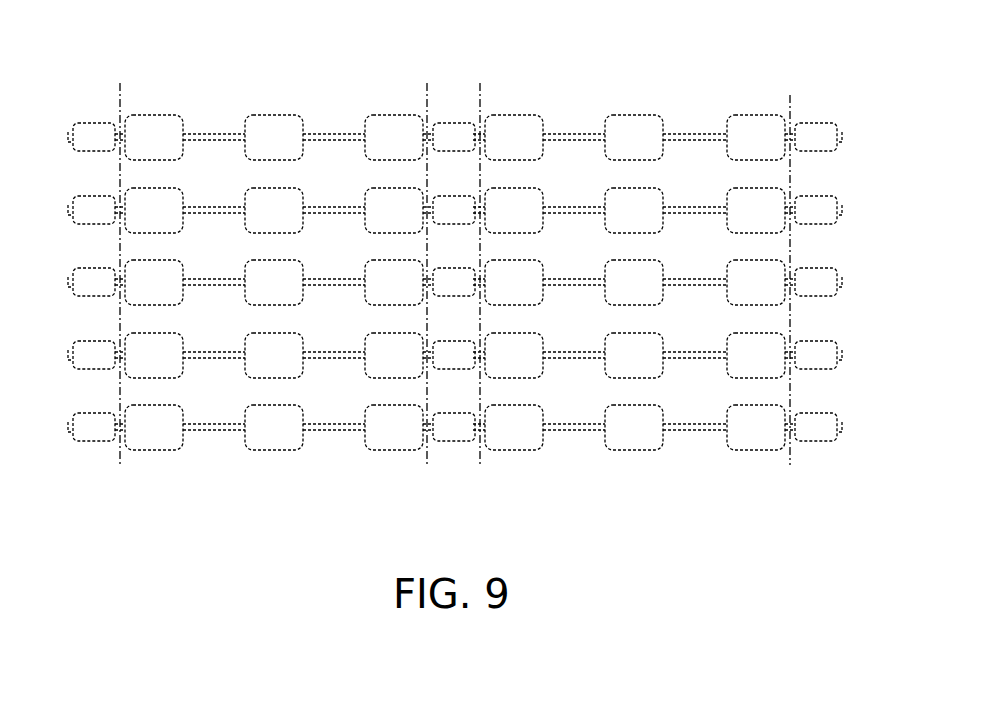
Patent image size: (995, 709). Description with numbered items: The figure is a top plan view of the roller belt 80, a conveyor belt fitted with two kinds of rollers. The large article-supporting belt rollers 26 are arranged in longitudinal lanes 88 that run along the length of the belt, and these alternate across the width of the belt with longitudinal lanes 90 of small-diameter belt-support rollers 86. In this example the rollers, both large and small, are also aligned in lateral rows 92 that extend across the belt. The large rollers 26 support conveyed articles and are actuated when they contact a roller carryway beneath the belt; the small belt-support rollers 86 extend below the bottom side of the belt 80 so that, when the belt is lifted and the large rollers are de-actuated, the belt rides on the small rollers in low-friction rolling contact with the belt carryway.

The roller belt 80 is at (691, 73).
The article-supporting belt rollers 26 is at (282, 146).
The belt-support rollers 86 is at (102, 146).
The longitudinal lanes of large rollers 88 is at (425, 91).
The longitudinal lanes of small rollers 90 is at (117, 75).
The lateral rows 92 is at (845, 192).